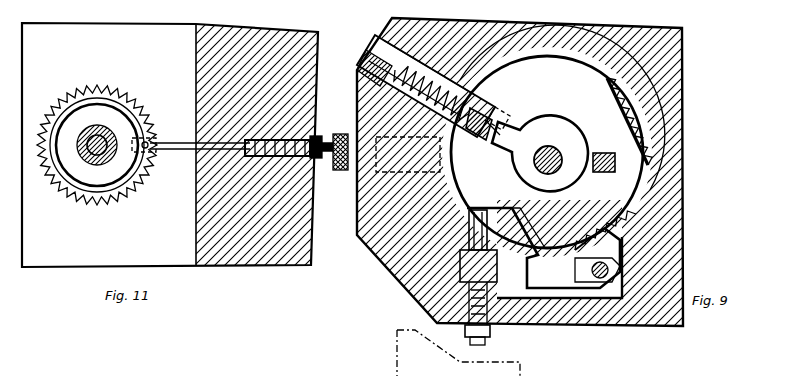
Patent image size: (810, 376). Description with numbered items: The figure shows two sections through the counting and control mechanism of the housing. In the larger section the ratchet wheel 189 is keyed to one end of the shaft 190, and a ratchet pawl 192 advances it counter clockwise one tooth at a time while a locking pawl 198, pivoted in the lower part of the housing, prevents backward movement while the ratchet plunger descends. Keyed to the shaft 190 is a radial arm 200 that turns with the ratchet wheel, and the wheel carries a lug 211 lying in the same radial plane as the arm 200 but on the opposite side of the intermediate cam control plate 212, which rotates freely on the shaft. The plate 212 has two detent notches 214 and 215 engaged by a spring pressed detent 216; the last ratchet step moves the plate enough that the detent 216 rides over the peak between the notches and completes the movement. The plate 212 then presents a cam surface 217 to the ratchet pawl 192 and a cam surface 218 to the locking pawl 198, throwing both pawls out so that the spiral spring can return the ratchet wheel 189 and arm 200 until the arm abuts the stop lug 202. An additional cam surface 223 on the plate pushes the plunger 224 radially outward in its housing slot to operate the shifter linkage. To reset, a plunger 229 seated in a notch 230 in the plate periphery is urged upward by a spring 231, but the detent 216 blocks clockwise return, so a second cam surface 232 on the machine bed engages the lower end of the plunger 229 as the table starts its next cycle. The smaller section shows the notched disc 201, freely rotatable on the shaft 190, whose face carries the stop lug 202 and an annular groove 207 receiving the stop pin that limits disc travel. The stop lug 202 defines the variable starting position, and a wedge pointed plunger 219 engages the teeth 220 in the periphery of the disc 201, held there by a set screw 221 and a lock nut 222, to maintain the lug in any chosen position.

In FIG. 9, the ratchet wheel 189 is at (642, 92).
In FIG. 11, the shaft 190 is at (95, 125).
In FIG. 9, the shaft 190 is at (556, 150).
In FIG. 9, the ratchet pawl 192 is at (652, 153).
In FIG. 9, the locking pawl 198 is at (576, 322).
In FIG. 9, the radial arm 200 is at (500, 132).
In FIG. 11, the notched disc 201 is at (80, 205).
In FIG. 11, the stop lug 202 is at (145, 135).
In FIG. 9, the stop lug 202 is at (616, 176).
In FIG. 11, the annular groove 207 is at (70, 105).
In FIG. 9, the lug 211 is at (490, 120).
In FIG. 9, the cam control plate 212 is at (622, 88).
In FIG. 9, the detent notch 214 is at (468, 118).
In FIG. 9, the detent notch 215 is at (490, 108).
In FIG. 9, the spring pressed detent 216 is at (480, 138).
In FIG. 9, the cam surface 217 is at (640, 200).
In FIG. 9, the cam surface 218 is at (540, 246).
In FIG. 11, the wedge pointed plunger 219 is at (185, 145).
In FIG. 11, the teeth 220 is at (173, 165).
In FIG. 11, the set screw 221 is at (316, 136).
In FIG. 11, the lock nut 222 is at (330, 172).
In FIG. 9, the cam surface 223 is at (415, 270).
In FIG. 9, the plunger 224 is at (368, 248).
In FIG. 9, the plunger 229 is at (440, 304).
In FIG. 9, the notch 230 is at (500, 220).
In FIG. 9, the spring 231 is at (462, 335).
In FIG. 9, the second cam surface 232 is at (430, 340).